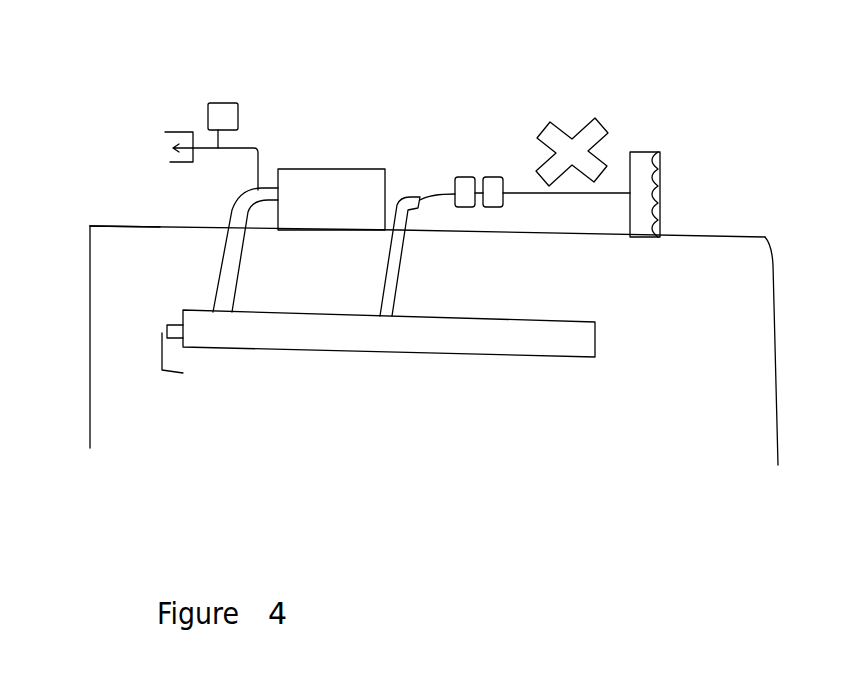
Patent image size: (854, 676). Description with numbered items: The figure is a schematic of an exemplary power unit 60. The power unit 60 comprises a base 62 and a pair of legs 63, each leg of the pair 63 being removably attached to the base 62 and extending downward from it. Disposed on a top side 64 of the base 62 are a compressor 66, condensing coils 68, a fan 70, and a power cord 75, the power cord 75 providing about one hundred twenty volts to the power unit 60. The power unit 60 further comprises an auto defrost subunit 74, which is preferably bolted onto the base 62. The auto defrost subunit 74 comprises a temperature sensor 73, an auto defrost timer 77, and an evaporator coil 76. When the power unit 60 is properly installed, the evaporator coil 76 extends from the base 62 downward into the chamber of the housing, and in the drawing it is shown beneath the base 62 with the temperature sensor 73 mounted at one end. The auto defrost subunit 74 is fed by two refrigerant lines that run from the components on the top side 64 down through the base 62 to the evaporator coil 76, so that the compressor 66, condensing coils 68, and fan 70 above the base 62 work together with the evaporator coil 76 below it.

The power unit 60 is at (576, 60).
The base 62 is at (725, 226).
The pair of legs 63 is at (87, 360).
The top side 64 is at (103, 195).
The compressor 66 is at (322, 180).
The condensing coils 68 is at (670, 156).
The fan 70 is at (606, 110).
The temperature sensor 73 is at (151, 346).
The auto defrost subunit 74 is at (410, 286).
The power cord 75 is at (153, 114).
The evaporator coil 76 is at (448, 342).
The auto defrost timer 77 is at (218, 107).